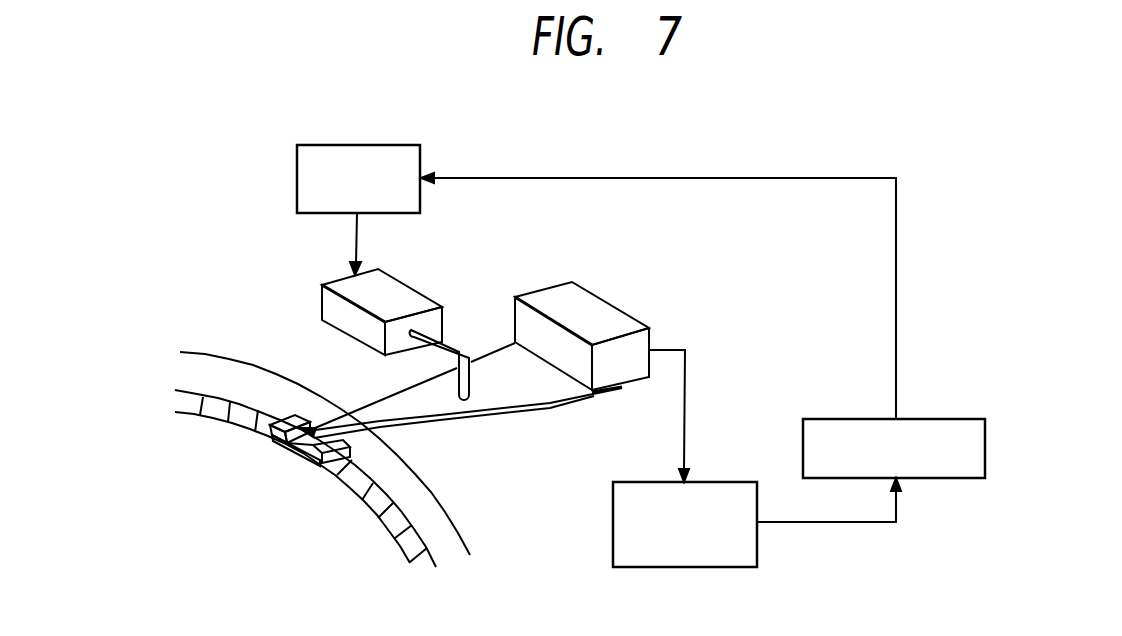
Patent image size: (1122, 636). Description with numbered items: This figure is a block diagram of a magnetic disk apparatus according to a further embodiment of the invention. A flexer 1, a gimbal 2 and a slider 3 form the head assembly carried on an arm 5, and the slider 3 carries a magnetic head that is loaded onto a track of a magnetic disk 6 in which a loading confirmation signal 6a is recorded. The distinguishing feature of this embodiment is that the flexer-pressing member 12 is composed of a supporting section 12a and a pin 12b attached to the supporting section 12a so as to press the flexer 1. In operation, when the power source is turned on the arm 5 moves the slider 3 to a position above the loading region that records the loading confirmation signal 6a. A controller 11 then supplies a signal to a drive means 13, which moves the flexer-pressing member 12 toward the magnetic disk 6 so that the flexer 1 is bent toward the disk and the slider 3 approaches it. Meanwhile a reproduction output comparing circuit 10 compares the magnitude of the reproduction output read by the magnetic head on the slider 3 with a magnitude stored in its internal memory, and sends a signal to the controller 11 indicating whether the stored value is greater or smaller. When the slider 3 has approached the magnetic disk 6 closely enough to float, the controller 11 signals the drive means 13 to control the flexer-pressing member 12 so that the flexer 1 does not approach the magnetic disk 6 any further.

The flexer 1 is at (500, 392).
The gimbal 2 is at (287, 442).
The slider 3 is at (292, 415).
The arm 5 is at (550, 295).
The magnetic disk 6 is at (349, 459).
The loading confirmation signal 6a is at (370, 502).
The reproduction output comparing circuit 10 is at (718, 482).
The controller 11 is at (935, 419).
The flexer-pressing member 12 is at (372, 315).
The supporting section 12a is at (398, 293).
The pin 12b is at (453, 348).
The drive means 13 is at (400, 145).